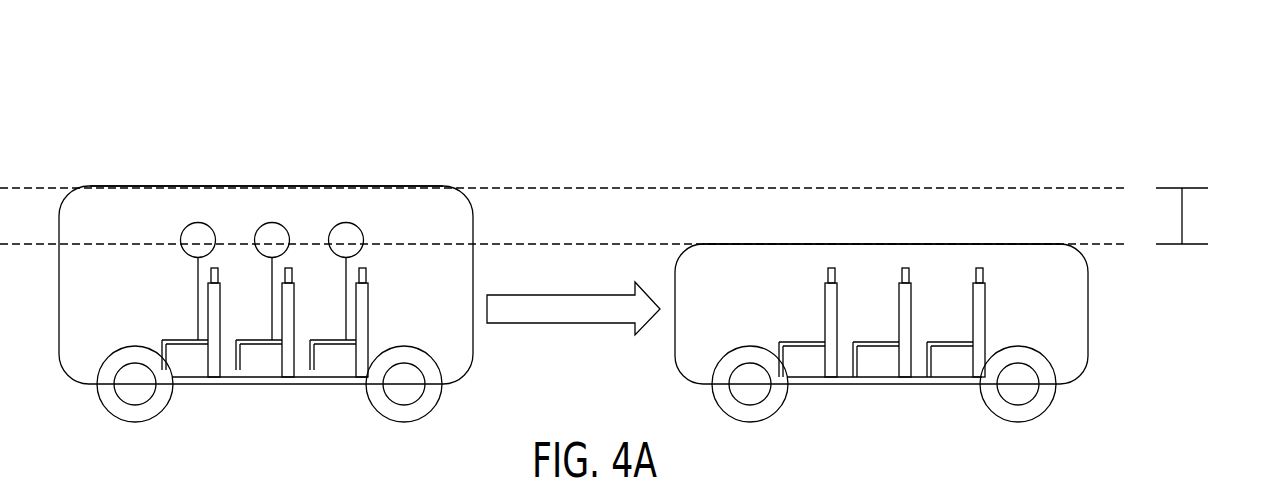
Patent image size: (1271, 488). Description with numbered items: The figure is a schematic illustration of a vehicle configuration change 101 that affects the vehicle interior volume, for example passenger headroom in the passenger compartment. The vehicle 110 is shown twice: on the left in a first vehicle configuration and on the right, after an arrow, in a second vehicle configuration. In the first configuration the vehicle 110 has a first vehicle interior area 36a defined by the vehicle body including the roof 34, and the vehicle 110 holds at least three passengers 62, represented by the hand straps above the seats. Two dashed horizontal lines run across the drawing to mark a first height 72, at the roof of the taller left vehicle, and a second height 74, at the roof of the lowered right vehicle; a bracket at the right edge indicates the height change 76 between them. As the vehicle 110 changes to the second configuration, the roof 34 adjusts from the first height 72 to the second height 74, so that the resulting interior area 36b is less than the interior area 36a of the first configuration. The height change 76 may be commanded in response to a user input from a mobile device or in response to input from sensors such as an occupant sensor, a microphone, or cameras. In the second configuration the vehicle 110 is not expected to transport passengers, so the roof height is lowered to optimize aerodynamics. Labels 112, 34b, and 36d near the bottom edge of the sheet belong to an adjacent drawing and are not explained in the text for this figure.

The vehicle configuration change 101 is at (135, 95).
The vehicle 110 is at (85, 158).
The vehicle 112 is at (68, 485).
The roof 34 is at (300, 184).
The roof 34b is at (901, 487).
The first vehicle interior area 36a is at (240, 304).
The interior area 36b is at (1077, 317).
The vehicle body 36d is at (1015, 482).
The passengers 62 is at (198, 309).
The first height 72 is at (605, 184).
The second height 74 is at (605, 242).
The height change 76 is at (1182, 222).